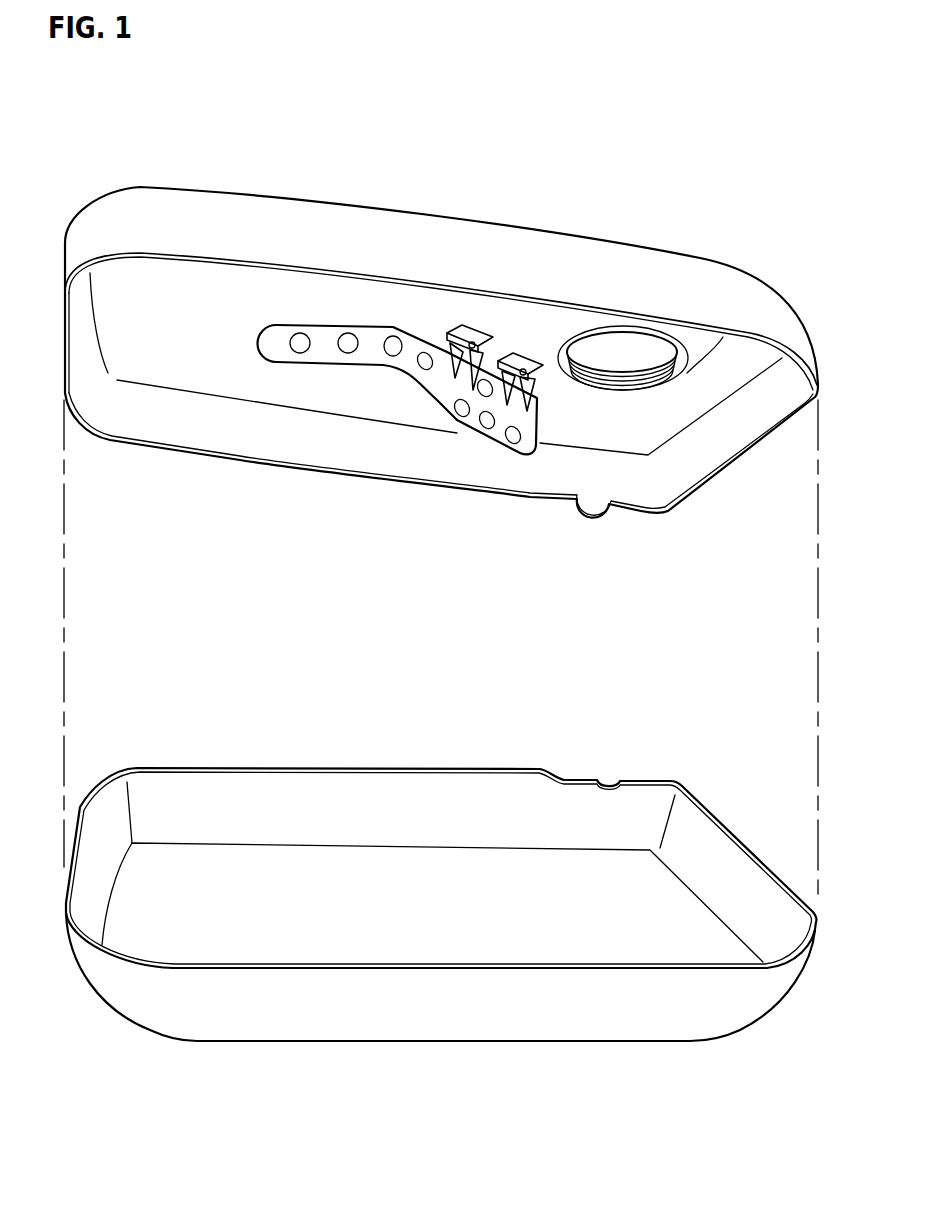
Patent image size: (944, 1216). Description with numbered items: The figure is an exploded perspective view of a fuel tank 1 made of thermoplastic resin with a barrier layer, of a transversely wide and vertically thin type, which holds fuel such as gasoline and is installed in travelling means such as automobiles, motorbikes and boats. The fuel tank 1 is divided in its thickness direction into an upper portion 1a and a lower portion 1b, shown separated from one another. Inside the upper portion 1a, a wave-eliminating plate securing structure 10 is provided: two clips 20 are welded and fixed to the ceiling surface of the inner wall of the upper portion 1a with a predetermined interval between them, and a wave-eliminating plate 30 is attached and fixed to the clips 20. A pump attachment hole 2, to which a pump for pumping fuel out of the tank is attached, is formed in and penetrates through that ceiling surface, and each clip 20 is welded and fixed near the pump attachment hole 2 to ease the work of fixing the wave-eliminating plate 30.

The fuel tank 1 is at (459, 193).
The upper portion 1a is at (363, 240).
The lower portion 1b is at (447, 1013).
The pump attachment hole 2 is at (648, 377).
The wave-eliminating plate securing structure 10 is at (483, 445).
The clip 20 is at (522, 357).
The wave-eliminating plate 30 is at (442, 383).